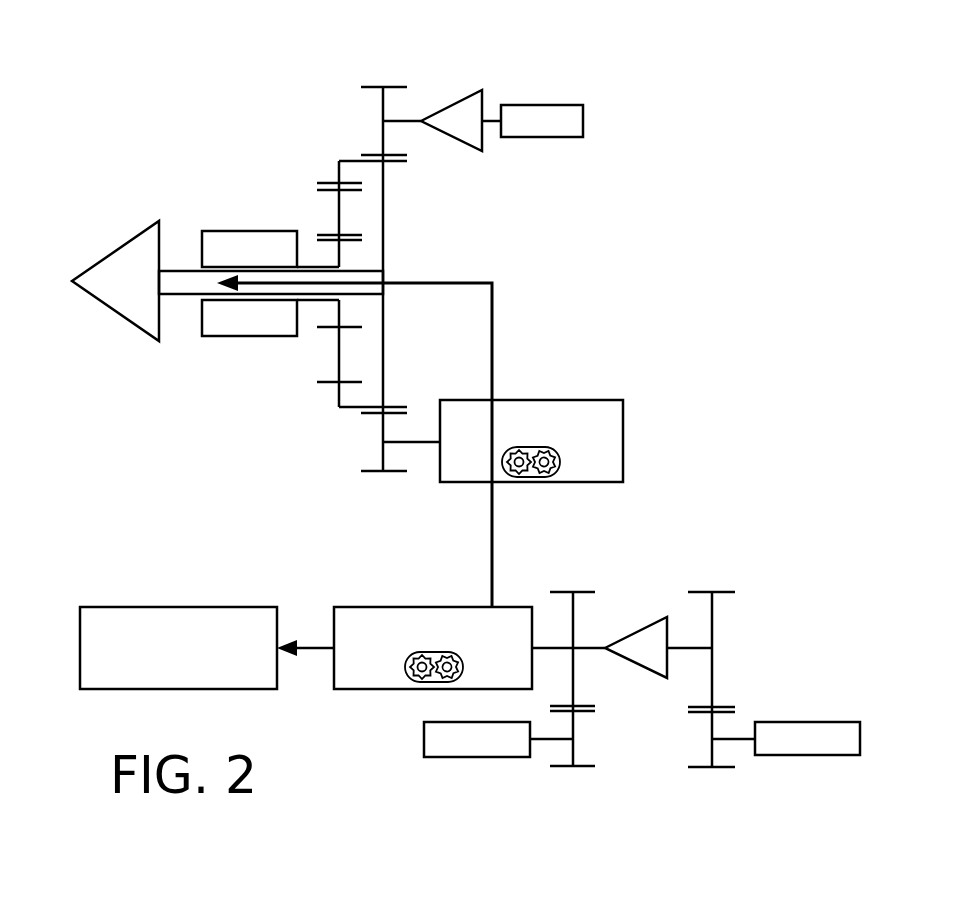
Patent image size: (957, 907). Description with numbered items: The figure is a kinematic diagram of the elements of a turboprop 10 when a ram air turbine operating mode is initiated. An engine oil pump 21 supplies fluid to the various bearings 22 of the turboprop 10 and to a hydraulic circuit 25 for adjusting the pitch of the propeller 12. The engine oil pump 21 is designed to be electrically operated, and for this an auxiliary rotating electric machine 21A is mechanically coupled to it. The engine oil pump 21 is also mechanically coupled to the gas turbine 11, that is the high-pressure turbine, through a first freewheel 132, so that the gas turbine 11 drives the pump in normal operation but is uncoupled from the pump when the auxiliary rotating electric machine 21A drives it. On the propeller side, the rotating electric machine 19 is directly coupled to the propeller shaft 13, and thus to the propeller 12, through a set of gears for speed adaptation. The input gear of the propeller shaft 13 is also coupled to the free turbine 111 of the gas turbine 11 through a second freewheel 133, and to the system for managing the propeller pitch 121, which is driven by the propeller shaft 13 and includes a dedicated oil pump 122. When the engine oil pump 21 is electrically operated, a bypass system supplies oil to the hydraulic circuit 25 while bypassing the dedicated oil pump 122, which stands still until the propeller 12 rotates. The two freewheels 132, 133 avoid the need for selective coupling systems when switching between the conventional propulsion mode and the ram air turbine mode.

The turboprop 10 is at (134, 145).
The gas turbine 11 is at (815, 735).
The propeller 12 is at (118, 243).
The propeller shaft 13 is at (180, 270).
The rotating electric machine 19 is at (267, 240).
The engine oil pump 21 is at (448, 620).
The auxiliary rotating electric machine 21A is at (432, 742).
The bearings 22 is at (162, 620).
The hydraulic circuit 25 is at (492, 363).
The free turbine 111 is at (538, 130).
The system for managing the propeller pitch 121 is at (611, 449).
The dedicated oil pump 122 is at (533, 447).
The first freewheel 132 is at (640, 655).
The second freewheel 133 is at (455, 135).